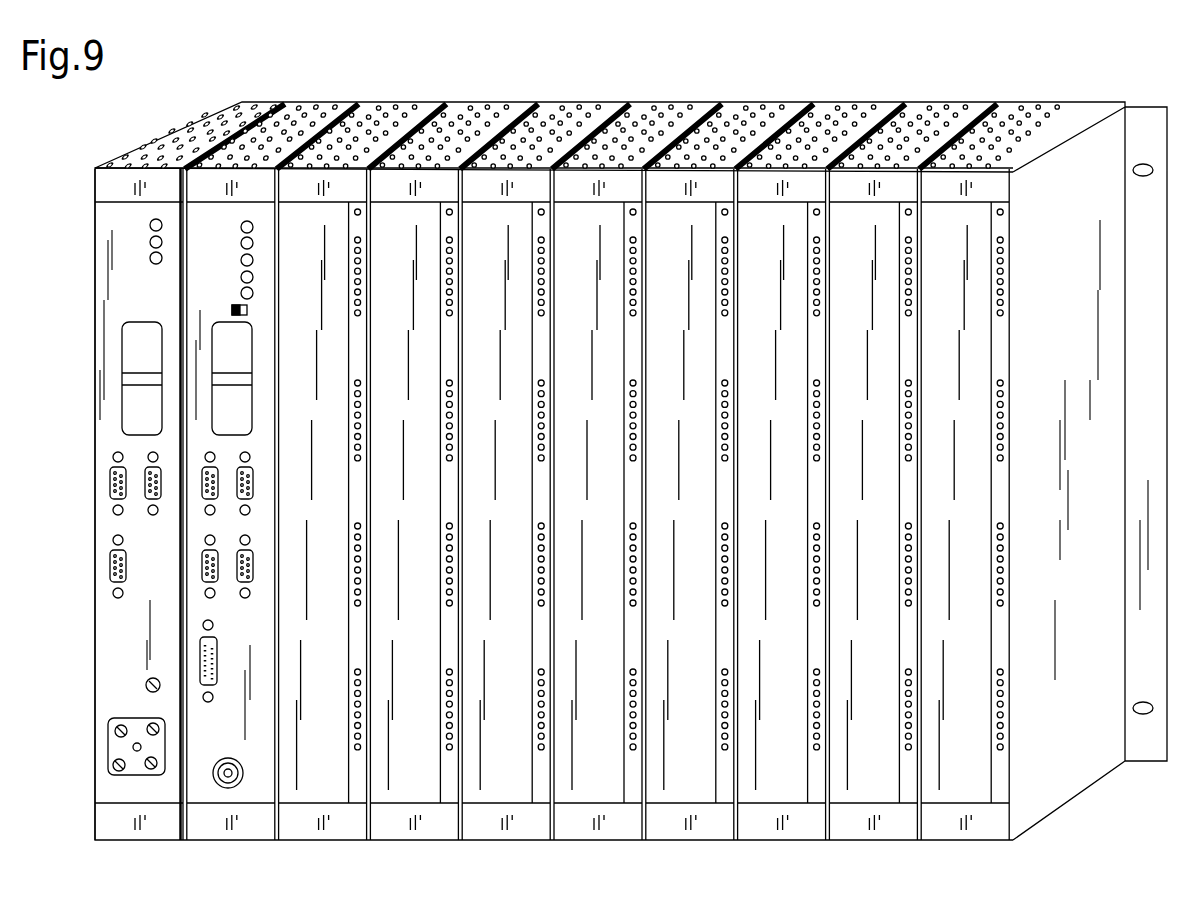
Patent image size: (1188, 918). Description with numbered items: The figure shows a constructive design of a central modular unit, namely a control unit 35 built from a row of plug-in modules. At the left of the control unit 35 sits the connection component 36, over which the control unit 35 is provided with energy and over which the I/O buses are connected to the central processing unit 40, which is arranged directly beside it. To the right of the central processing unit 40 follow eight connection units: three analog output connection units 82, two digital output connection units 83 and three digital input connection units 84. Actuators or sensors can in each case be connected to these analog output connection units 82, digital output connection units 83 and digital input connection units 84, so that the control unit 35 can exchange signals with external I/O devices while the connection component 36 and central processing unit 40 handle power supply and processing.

The control unit 35 is at (1083, 170).
The connection component 36 is at (141, 188).
The central processing unit 40 is at (229, 190).
The analog output connection unit 82 is at (325, 190).
The digital output connection unit 83 is at (605, 190).
The digital input connection unit 84 is at (790, 193).